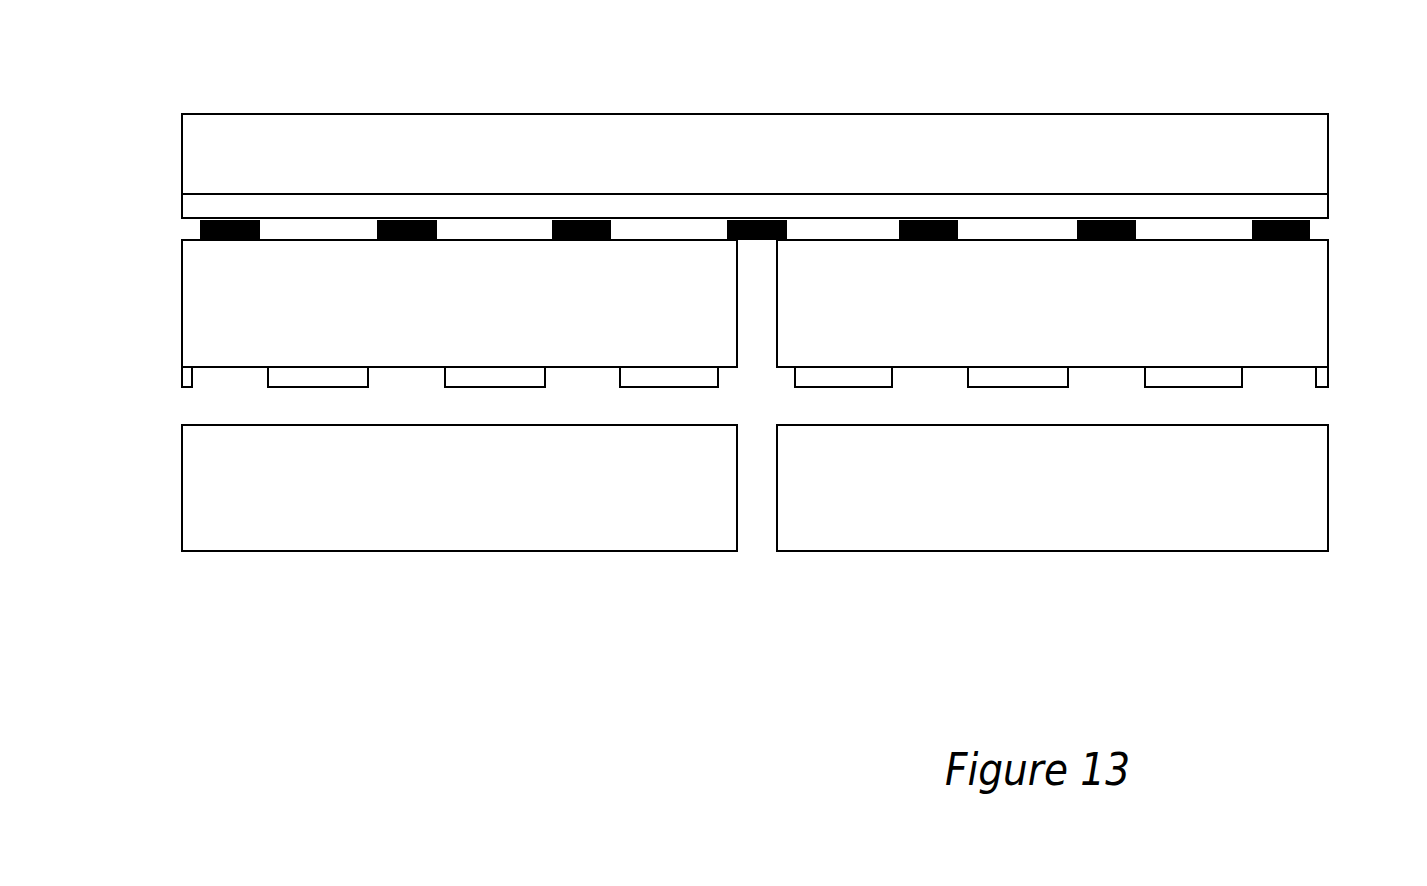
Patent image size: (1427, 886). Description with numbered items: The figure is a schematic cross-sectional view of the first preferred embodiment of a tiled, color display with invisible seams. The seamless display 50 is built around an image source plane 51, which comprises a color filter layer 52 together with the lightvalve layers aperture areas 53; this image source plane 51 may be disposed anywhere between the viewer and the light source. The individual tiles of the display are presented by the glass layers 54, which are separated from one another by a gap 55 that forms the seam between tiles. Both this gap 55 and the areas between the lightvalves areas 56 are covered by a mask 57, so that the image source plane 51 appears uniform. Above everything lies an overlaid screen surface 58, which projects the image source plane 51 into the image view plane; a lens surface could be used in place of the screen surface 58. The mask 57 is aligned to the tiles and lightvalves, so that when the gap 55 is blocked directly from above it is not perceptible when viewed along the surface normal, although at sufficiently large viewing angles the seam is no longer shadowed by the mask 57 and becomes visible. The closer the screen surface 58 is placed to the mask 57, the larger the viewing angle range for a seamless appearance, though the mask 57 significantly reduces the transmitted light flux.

The seamless display 50 is at (1352, 110).
The image source plane 51 is at (182, 407).
The color filter layer 52 is at (318, 380).
The lightvalve layers aperture areas 53 is at (1250, 437).
The glass layers 54 is at (675, 332).
The gap 55 is at (757, 510).
The lightvalves areas 56 is at (590, 372).
The mask 57 is at (582, 220).
The screen surface 58 is at (798, 205).